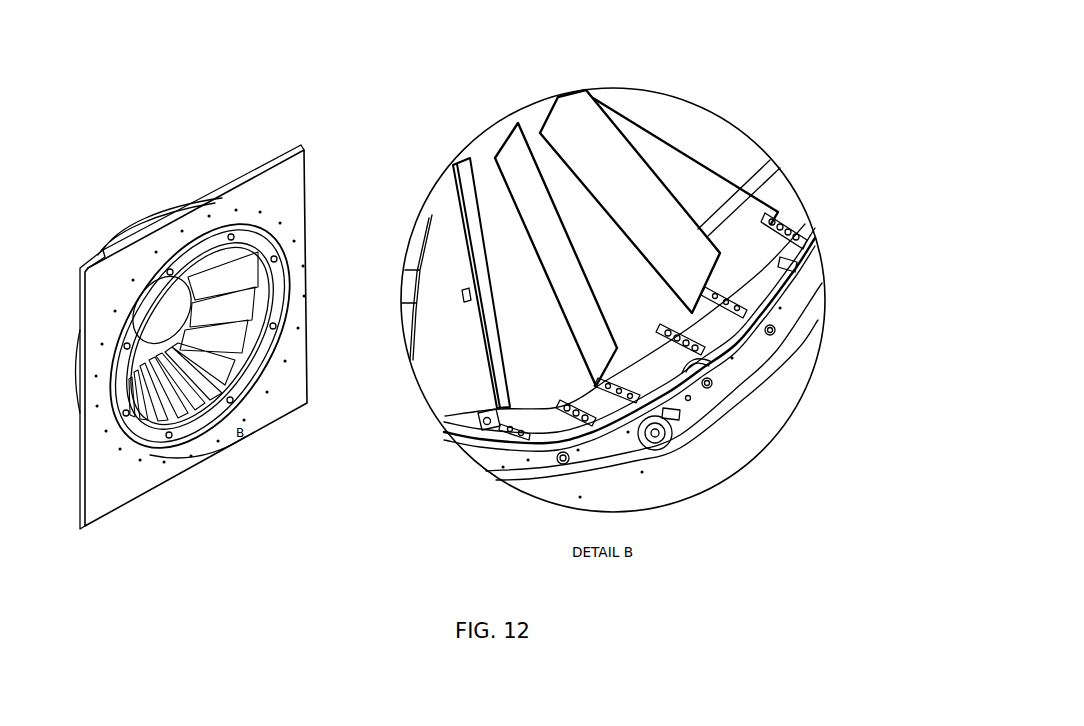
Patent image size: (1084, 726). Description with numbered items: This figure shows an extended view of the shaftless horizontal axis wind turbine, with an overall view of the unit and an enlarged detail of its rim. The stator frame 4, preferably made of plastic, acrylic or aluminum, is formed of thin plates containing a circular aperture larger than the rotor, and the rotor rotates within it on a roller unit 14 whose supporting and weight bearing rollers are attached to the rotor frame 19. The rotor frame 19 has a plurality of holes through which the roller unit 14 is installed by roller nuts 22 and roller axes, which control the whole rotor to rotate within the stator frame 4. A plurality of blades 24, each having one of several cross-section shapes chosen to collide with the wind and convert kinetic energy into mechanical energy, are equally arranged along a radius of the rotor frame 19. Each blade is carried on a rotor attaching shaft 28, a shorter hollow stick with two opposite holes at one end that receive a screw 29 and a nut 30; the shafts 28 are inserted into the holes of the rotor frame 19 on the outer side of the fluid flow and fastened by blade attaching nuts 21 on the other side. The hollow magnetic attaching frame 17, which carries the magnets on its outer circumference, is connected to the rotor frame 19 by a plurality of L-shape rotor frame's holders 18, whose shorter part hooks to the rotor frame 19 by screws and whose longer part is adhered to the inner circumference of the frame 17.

The stator frame 4 is at (690, 418).
The roller unit 14 is at (705, 363).
The hollow magnetic attaching frame 17 is at (748, 222).
The L-shape rotor frame's holder 18 is at (790, 227).
The rotor frame 19 is at (688, 397).
The blade attaching nut 21 is at (517, 483).
The roller nut 22 is at (710, 380).
The blade 24 is at (572, 132).
The rotor attaching shaft 28 is at (503, 433).
The screw 29 is at (515, 425).
The nut 30 is at (710, 288).